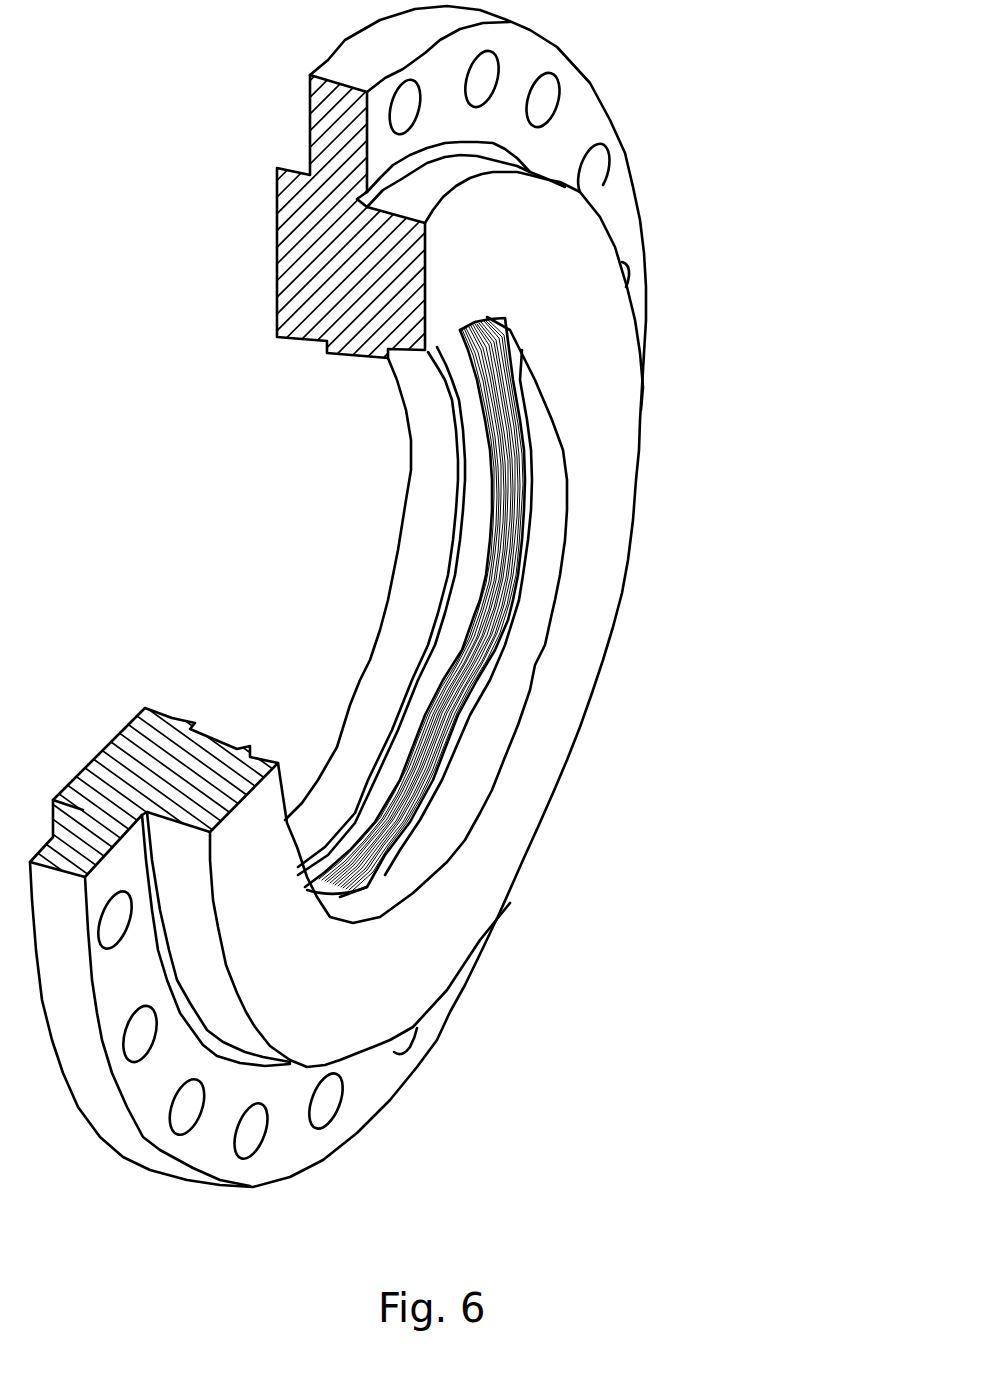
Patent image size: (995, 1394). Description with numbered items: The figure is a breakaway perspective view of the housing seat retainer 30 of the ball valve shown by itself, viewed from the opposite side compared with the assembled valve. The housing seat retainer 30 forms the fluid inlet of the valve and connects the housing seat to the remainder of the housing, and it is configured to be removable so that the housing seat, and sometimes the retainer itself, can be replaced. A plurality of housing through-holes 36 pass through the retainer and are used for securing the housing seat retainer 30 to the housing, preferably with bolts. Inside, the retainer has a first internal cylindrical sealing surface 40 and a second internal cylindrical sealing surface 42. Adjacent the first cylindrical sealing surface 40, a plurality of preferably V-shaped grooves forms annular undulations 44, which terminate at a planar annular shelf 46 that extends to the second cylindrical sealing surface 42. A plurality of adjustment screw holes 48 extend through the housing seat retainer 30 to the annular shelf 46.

The housing seat retainer 30 is at (78, 280).
The housing through-holes 36 is at (187, 1305).
The first internal cylindrical sealing surface 40 is at (472, 448).
The second internal cylindrical sealing surface 42 is at (548, 413).
The annular undulations 44 is at (473, 670).
The planar annular shelf 46 is at (373, 883).
The adjustment screw holes 48 is at (521, 582).